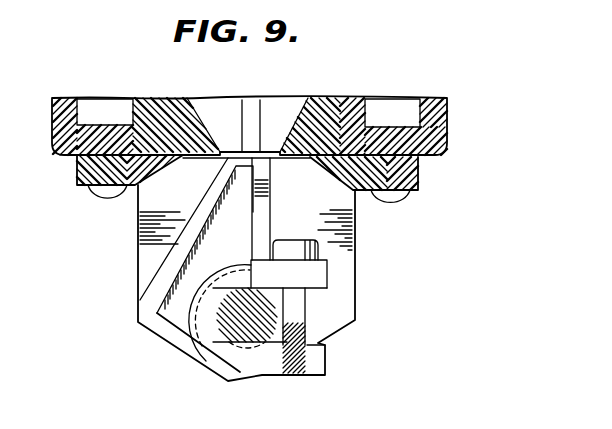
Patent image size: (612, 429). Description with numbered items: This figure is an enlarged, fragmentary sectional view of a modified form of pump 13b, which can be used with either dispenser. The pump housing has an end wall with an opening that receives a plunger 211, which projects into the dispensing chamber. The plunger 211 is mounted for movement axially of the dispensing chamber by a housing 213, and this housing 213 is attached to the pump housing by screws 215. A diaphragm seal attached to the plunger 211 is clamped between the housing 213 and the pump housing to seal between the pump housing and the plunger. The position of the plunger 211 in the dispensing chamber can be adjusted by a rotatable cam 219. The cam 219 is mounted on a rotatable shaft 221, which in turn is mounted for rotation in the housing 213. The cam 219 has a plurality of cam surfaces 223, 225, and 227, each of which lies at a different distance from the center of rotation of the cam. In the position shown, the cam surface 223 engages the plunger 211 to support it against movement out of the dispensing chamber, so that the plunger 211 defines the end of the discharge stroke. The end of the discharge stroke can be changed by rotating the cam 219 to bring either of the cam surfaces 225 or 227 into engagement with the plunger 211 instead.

The pump 13b is at (458, 119).
The plunger 211 is at (247, 112).
The cam surface 223 is at (262, 150).
The housing 213 is at (418, 171).
The screws 215 is at (108, 201).
The rotatable cam 219 is at (232, 207).
The cam surface 225 is at (138, 328).
The rotatable shaft 221 is at (202, 347).
The cam surface 227 is at (258, 384).